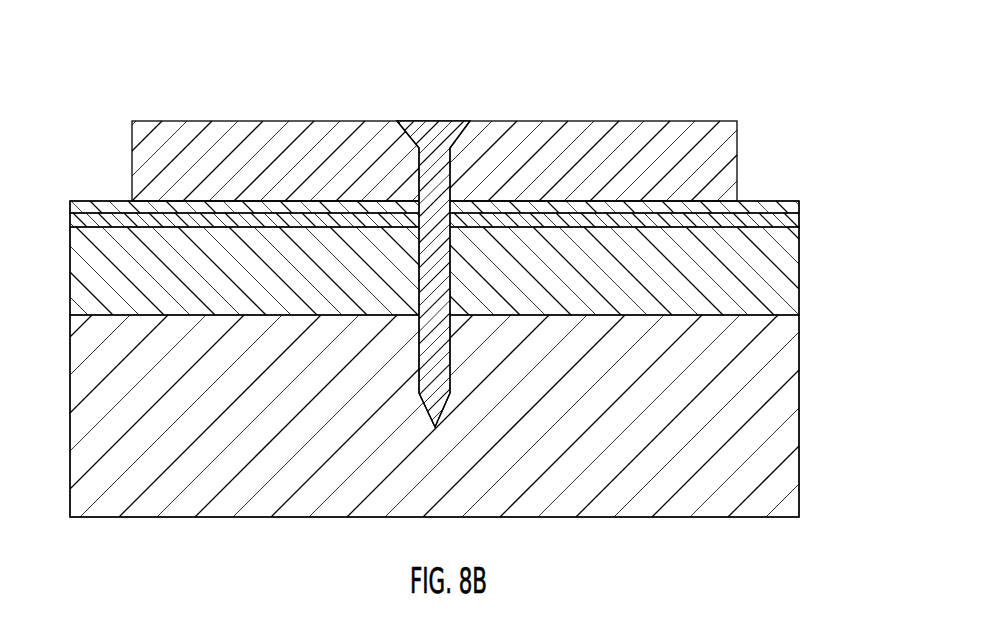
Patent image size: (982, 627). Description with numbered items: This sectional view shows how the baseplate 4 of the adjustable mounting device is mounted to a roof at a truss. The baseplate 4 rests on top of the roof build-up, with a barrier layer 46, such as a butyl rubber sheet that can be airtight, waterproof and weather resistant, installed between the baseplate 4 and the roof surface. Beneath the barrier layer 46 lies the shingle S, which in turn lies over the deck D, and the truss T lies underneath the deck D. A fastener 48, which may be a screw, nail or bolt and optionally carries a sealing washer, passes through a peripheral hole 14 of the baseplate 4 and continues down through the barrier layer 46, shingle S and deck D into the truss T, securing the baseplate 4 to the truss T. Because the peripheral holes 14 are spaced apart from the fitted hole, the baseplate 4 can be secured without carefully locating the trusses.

The peripheral hole 14 is at (369, 84).
The baseplate 4 is at (722, 152).
The barrier layer 46 is at (783, 208).
The fastener 48 is at (448, 122).
The shingle S is at (785, 218).
The deck D is at (788, 273).
The truss T is at (780, 362).